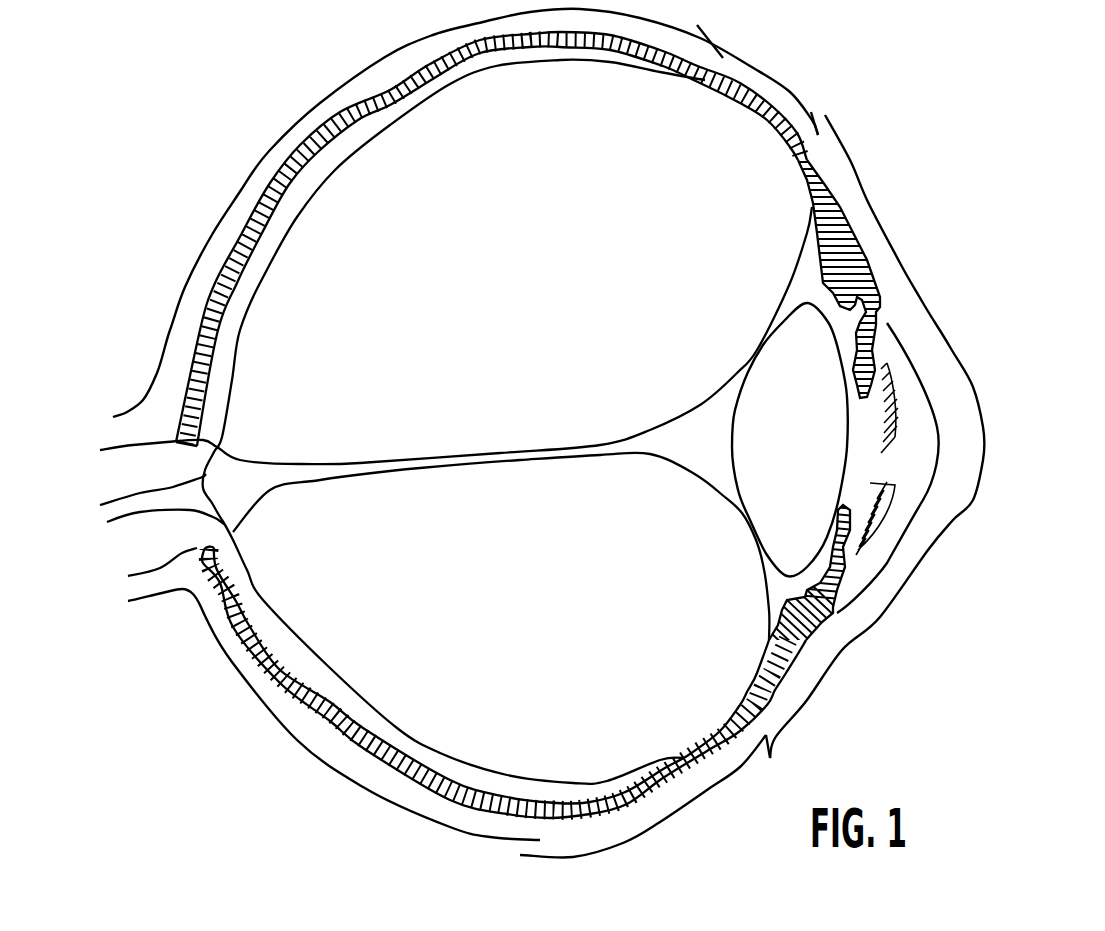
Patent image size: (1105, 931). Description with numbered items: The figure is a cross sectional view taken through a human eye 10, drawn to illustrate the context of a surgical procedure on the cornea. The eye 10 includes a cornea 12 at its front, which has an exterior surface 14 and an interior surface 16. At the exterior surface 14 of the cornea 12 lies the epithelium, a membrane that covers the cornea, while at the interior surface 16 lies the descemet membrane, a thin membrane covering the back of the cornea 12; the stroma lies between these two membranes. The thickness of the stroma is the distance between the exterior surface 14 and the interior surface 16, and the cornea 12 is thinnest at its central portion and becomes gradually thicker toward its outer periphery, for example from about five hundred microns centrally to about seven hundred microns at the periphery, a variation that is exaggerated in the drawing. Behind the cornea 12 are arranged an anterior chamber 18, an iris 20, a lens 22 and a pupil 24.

The eye 10 is at (966, 158).
The cornea 12 is at (903, 567).
The exterior surface 14 is at (985, 430).
The interior surface 16 is at (930, 480).
The anterior chamber 18 is at (912, 410).
The iris 20 is at (847, 550).
The lens 22 is at (750, 503).
The pupil 24 is at (880, 460).